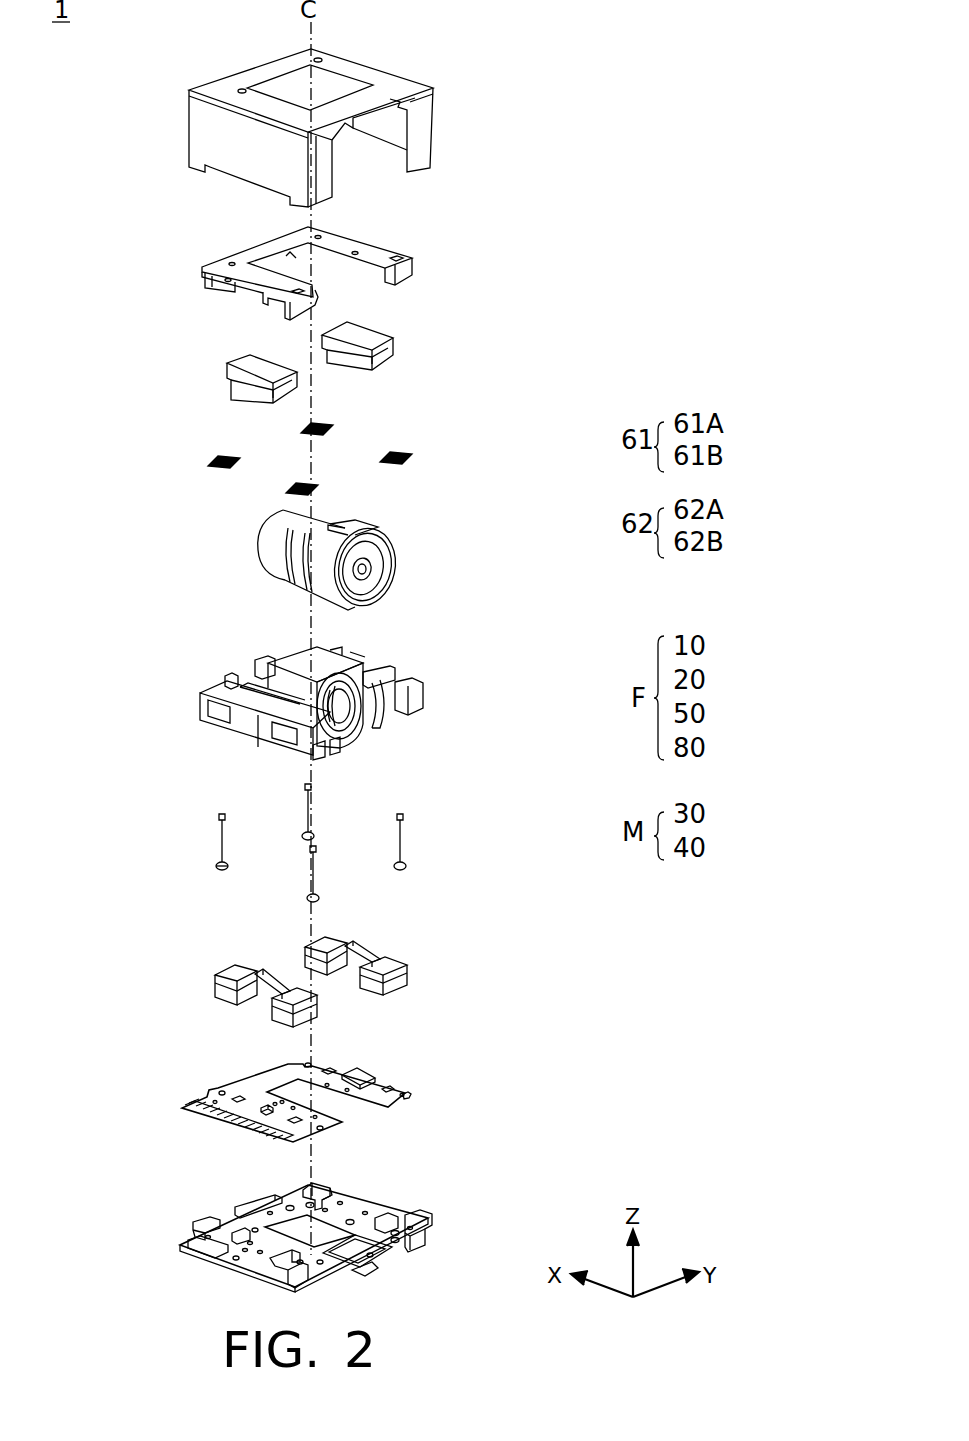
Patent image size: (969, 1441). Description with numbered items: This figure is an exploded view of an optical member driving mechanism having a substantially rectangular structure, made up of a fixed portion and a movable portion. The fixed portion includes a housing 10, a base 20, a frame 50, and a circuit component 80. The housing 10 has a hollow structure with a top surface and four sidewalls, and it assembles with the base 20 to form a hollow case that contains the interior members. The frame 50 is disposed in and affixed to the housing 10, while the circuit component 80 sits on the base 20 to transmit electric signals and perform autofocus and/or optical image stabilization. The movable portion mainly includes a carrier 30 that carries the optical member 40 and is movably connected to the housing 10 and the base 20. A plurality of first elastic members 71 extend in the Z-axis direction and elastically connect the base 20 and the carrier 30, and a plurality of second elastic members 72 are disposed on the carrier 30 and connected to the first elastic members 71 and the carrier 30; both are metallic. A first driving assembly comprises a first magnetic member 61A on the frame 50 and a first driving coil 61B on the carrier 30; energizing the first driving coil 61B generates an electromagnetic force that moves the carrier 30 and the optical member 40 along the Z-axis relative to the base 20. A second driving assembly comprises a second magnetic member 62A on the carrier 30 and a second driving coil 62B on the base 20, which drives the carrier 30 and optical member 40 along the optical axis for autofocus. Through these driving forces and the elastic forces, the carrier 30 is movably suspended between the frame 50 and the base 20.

The housing 10 is at (400, 83).
The base 20 is at (375, 1237).
The carrier 30 is at (410, 700).
The optical member 40 is at (368, 530).
The frame 50 is at (385, 250).
The first magnetic member 61A is at (378, 338).
The first driving coil 61B is at (392, 356).
The second magnetic member 62A is at (385, 965).
The second driving coil 62B is at (398, 980).
The first elastic members 71 is at (400, 845).
The second elastic members 72 is at (402, 453).
The circuit component 80 is at (380, 1085).